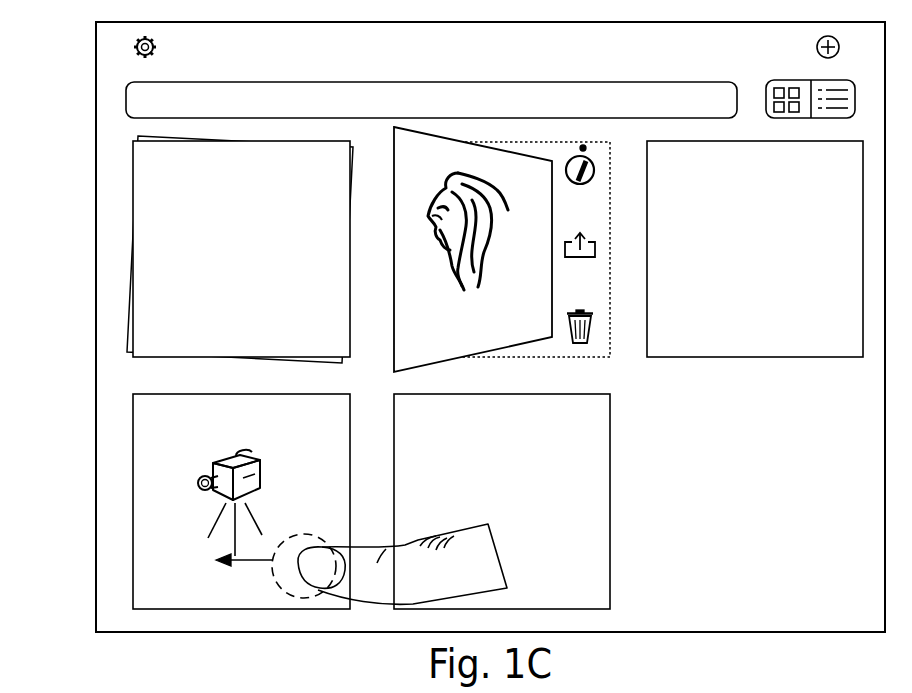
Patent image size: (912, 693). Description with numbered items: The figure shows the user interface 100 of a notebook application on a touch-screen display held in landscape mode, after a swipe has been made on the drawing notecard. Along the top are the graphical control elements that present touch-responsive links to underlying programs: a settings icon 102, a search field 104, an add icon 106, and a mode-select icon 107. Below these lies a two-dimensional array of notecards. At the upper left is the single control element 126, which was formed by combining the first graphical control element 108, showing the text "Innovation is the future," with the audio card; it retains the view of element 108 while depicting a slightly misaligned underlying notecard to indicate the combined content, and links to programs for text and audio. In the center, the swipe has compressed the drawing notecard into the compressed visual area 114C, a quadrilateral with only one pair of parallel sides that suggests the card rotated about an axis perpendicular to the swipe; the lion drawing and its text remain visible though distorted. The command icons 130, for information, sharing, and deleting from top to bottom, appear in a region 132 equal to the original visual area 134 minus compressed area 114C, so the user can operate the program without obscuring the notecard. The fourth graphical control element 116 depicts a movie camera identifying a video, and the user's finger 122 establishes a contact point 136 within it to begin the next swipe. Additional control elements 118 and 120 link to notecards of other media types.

The user interface 100 is at (76, 95).
The settings icon 102 is at (157, 45).
The search field 104 is at (488, 112).
The add icon 106 is at (816, 48).
The mode-select icon 107 is at (782, 80).
The first graphical control element 108 is at (256, 353).
The compressed visual area 114C is at (432, 361).
The fourth graphical control element 116 is at (256, 604).
The additional control element 118 is at (520, 452).
The additional control element 120 is at (772, 198).
The user's finger 122 is at (463, 599).
The single control element 126 is at (125, 238).
The command icons 130 is at (580, 184).
The region 132 is at (597, 217).
The original visual area 134 is at (565, 357).
The contact point 136 is at (313, 538).